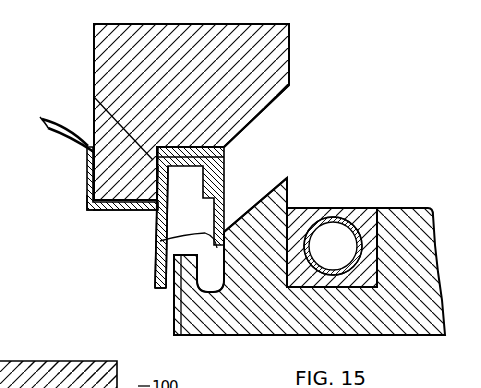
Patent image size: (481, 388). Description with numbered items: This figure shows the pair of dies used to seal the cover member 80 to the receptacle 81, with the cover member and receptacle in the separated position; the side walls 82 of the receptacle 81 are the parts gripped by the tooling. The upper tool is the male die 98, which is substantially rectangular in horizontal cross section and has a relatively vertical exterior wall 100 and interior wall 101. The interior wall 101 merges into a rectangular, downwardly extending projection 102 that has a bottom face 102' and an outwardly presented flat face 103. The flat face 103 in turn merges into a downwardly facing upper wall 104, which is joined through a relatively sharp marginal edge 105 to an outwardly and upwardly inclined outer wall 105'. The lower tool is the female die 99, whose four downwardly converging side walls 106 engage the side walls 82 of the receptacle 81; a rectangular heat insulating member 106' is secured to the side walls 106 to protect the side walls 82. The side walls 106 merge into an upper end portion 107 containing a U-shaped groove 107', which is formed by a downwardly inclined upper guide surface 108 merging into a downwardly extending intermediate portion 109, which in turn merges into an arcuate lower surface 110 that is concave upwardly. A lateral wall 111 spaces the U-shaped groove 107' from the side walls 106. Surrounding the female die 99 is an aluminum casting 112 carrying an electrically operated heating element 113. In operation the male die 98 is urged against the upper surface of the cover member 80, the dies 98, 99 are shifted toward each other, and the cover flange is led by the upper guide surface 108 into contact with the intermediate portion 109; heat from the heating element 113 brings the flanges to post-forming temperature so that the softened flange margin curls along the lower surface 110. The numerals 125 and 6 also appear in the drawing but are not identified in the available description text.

The male die 98 is at (292, 38).
The female die 99 is at (338, 172).
The exterior wall 100 is at (290, 64).
The interior wall 101 is at (94, 32).
The downwardly extending projection 102 is at (95, 178).
The bottom face 102' is at (67, 205).
The flat face 103 is at (95, 98).
The upper wall 104 is at (228, 146).
The marginal edge 105 is at (221, 215).
The outer wall 105' is at (290, 110).
The side walls 106 is at (139, 295).
The heat insulating member 106' is at (147, 336).
The upper end portion 107 is at (223, 303).
The U-shaped groove 107' is at (130, 295).
The upper guide surface 108 is at (275, 189).
The intermediate portion 109 is at (164, 225).
The lower surface 110 is at (208, 279).
The lateral wall 111 is at (160, 241).
The aluminum casting 112 is at (370, 280).
The heating element 113 is at (347, 229).
The bracket flange 125 is at (105, 208).
The cover member 80 is at (58, 150).
The receptacle 81 is at (154, 271).
The side walls 82 is at (156, 254).
The partial numeral 6 is at (2, 183).